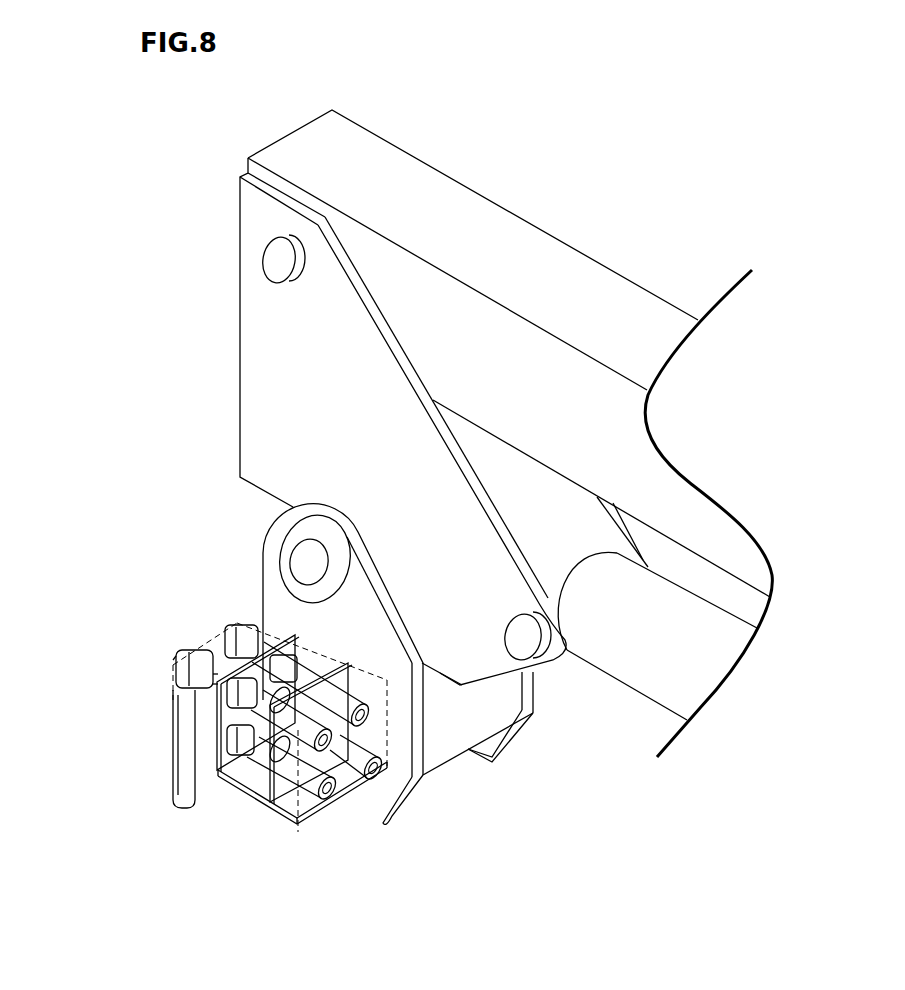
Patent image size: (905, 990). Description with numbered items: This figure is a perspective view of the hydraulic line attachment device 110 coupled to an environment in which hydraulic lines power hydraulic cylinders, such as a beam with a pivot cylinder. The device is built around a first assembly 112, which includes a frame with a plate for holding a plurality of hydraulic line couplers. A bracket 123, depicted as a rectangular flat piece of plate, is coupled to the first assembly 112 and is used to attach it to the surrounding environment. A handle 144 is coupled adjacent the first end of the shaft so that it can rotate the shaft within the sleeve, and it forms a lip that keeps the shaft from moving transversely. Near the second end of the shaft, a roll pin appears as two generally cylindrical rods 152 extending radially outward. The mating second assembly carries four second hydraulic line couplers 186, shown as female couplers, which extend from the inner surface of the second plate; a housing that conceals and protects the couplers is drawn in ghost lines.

The hydraulic line attachment device 110 is at (255, 852).
The first assembly 112 is at (145, 718).
The bracket 123 is at (342, 787).
The handle 144 is at (185, 797).
The cylindrical rods 152 is at (326, 845).
The second hydraulic line couplers 186 is at (262, 628).